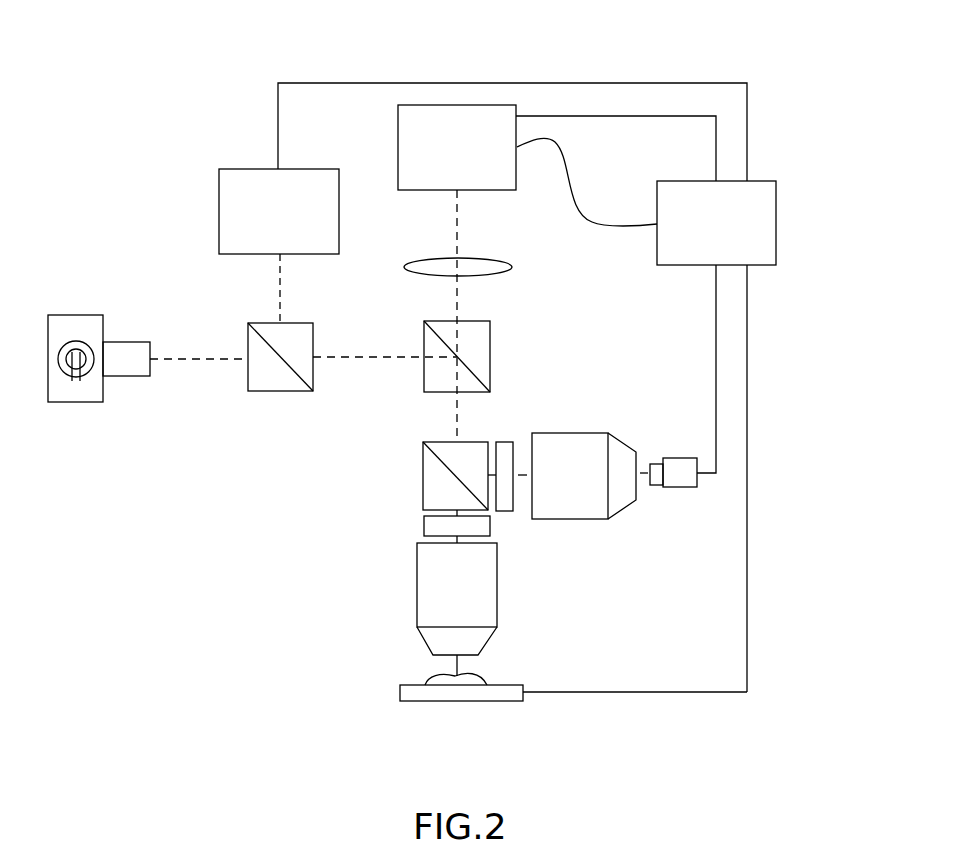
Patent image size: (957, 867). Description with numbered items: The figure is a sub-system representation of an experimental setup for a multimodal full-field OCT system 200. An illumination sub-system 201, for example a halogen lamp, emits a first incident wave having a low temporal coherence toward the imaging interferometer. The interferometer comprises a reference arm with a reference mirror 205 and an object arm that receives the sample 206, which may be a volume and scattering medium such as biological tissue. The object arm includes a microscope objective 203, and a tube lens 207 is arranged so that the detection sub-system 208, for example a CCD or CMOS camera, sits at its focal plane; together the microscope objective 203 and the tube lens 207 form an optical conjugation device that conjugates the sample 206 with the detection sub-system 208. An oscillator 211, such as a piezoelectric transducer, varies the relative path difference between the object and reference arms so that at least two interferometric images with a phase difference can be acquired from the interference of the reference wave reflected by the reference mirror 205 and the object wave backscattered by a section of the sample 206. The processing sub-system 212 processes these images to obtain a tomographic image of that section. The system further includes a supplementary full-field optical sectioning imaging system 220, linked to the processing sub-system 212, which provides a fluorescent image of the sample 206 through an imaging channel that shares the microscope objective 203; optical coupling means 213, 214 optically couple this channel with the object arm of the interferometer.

The multimodal Full-Field OCT system 200 is at (205, 35).
The illumination sub-system 201 is at (78, 395).
The microscope objective 203 is at (432, 601).
The reference mirror 205 is at (655, 470).
The sample 206 is at (437, 682).
The tube lens 207 is at (478, 258).
The detection sub-system 208 is at (405, 152).
The oscillator 211 is at (683, 470).
The processing sub-system 212 is at (767, 210).
The optical coupling means 213 is at (270, 383).
The optical coupling means 214 is at (433, 346).
The supplementary full-field optical sectioning imaging system 220 is at (228, 201).